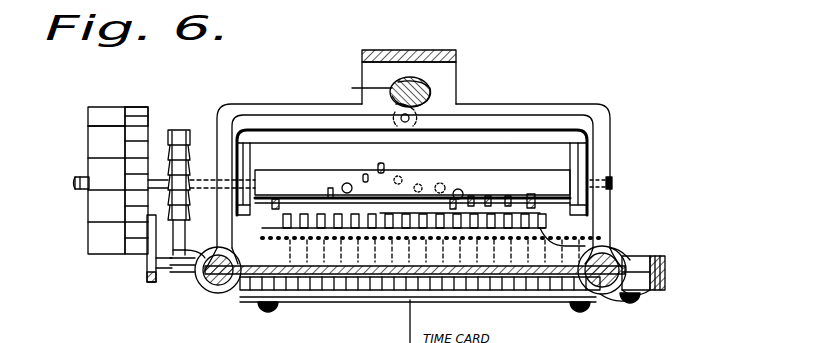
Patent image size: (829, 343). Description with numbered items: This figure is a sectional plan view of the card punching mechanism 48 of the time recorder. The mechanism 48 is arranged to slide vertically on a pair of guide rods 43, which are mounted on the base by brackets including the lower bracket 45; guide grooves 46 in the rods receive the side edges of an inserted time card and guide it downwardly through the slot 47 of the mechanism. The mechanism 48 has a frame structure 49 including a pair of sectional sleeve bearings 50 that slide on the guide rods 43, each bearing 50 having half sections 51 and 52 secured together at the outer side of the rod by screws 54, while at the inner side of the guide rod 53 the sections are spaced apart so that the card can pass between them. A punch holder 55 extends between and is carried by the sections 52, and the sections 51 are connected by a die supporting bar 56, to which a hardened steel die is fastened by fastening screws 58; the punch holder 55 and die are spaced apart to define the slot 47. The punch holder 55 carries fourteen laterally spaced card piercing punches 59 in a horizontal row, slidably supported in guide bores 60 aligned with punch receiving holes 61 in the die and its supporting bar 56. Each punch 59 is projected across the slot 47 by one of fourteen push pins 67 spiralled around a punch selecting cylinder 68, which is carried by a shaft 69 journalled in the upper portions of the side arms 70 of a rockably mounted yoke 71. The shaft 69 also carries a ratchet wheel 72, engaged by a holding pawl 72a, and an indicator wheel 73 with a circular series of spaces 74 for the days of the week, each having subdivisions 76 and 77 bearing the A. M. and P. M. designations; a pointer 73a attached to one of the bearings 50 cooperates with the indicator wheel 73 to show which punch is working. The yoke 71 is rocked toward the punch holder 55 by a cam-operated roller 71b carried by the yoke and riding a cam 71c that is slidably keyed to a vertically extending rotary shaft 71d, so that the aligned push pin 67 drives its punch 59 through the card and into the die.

The guide rods 43 is at (213, 244).
The lower bracket 45 is at (620, 232).
The guide grooves 46 is at (630, 300).
The slot 47 is at (254, 264).
The card punching mechanism 48 is at (222, 103).
The frame structure 49 is at (612, 198).
The sectional sleeve bearings 50 is at (615, 255).
The half section 51 is at (655, 278).
The half section 52 is at (665, 260).
The guide rod 53 is at (168, 262).
The screws 54 is at (652, 296).
The punch holder 55 is at (556, 242).
The die supporting bar 56 is at (632, 296).
The fastening screws 58 is at (278, 306).
The card piercing punches 59 is at (420, 225).
The guide bores 60 is at (432, 297).
The punch receiving holes 61 is at (334, 298).
The push pins 67 is at (349, 183).
The punch selecting cylinder 68 is at (403, 178).
The shaft 69 is at (190, 178).
The side arms 70 is at (250, 157).
The rocking yoke 71 is at (590, 130).
The cam-operated roller 71b is at (416, 112).
The cam 71c is at (430, 85).
The rotary shaft 71d is at (352, 85).
The ratchet wheel 72 is at (179, 187).
The holding pawl 72a is at (168, 245).
The indicator wheel 73 is at (140, 105).
The pointer 73a is at (150, 278).
The spaces 74 is at (95, 163).
The subdivision 76 is at (120, 106).
The subdivision 77 is at (88, 128).